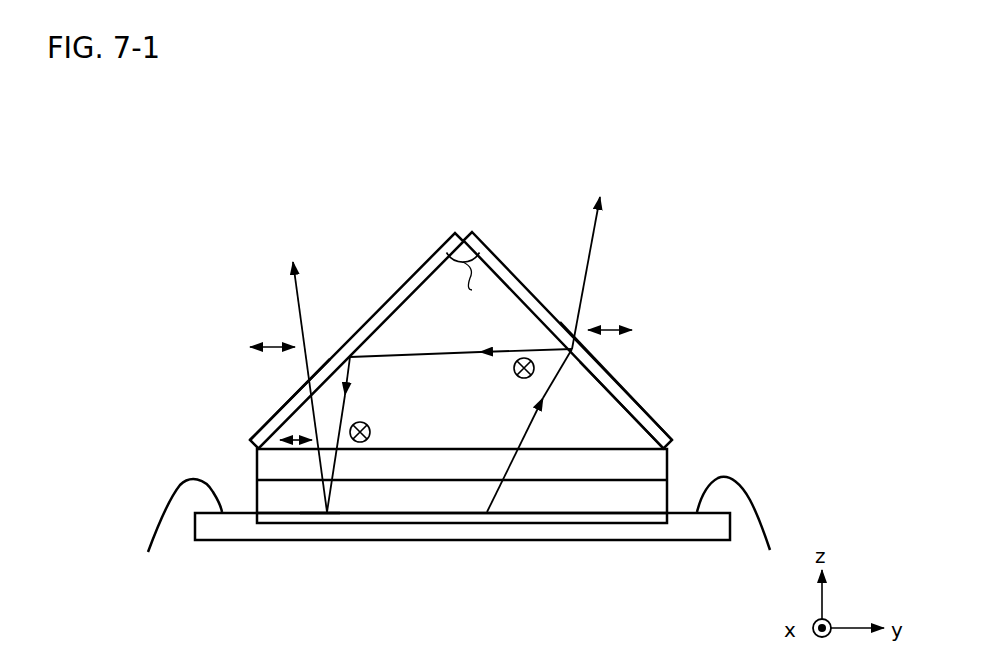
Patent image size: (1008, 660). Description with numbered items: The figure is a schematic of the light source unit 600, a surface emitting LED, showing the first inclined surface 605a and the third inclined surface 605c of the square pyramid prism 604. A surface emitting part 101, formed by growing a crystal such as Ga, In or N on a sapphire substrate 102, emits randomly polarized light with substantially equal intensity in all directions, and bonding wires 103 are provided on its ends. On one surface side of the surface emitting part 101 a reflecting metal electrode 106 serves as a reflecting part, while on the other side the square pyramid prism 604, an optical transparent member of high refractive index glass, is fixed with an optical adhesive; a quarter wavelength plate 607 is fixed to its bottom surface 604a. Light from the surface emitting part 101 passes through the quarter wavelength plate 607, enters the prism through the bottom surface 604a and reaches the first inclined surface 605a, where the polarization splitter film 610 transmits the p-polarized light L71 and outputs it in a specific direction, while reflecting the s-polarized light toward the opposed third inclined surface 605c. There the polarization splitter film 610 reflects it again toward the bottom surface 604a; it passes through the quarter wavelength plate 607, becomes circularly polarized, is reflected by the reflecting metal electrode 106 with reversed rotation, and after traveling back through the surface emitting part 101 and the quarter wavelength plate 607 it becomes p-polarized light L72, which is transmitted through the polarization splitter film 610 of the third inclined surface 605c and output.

The light source unit 600 is at (650, 184).
The polarization splitter film 610 is at (405, 280).
The square pyramid prism 604 is at (505, 305).
The bottom surface 604a is at (633, 446).
The first inclined surface 605a is at (623, 403).
The third inclined surface 605c is at (265, 423).
The quarter wavelength plate 607 is at (665, 466).
The bonding wire 103 is at (162, 499).
The surface emitting part 101 is at (303, 503).
The reflecting metal electrode 106 is at (536, 516).
The sapphire substrate 102 is at (663, 497).
The p-polarized light L71 is at (586, 272).
The p-polarized light L72 is at (297, 305).